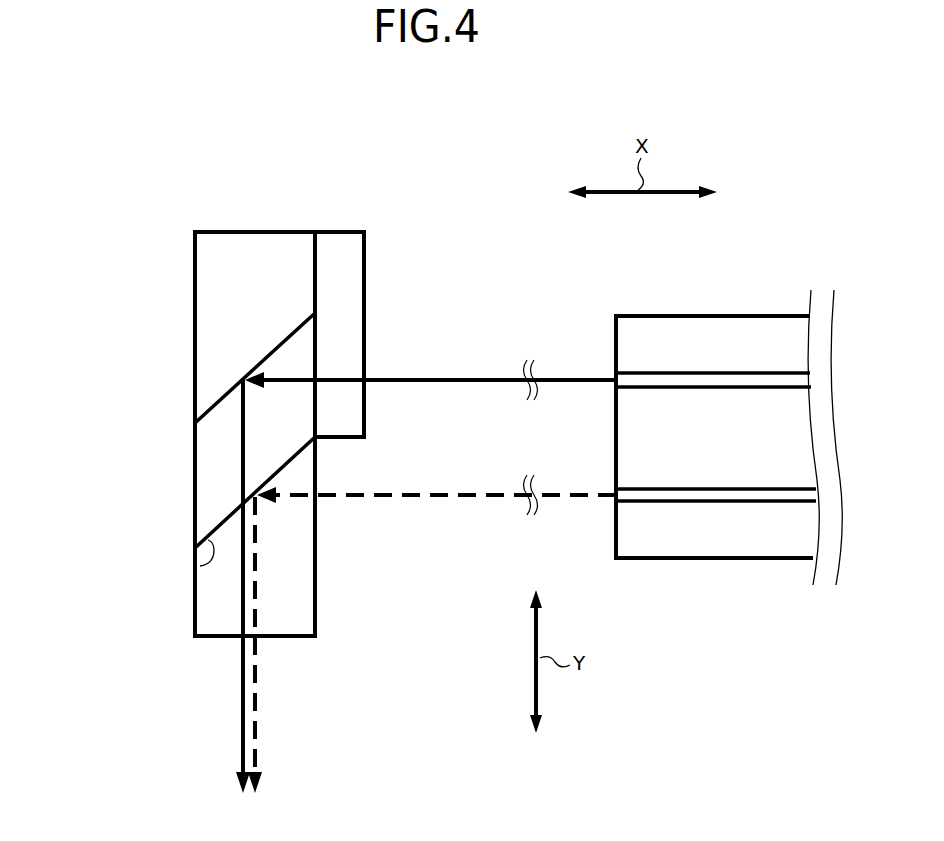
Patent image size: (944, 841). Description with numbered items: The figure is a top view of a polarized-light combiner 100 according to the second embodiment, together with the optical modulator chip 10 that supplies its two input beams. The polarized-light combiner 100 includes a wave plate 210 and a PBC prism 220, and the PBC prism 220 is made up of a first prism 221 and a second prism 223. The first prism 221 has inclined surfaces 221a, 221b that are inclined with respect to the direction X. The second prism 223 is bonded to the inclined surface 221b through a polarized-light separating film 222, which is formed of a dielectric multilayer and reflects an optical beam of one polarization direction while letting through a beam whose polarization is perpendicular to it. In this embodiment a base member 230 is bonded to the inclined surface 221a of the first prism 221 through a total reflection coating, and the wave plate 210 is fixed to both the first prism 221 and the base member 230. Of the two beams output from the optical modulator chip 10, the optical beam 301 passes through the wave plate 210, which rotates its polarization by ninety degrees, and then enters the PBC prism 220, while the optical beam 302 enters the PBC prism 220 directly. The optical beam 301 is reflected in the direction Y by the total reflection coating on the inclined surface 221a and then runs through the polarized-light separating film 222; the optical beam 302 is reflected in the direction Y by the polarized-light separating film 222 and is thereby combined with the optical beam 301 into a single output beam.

The polarized-light combiner 100 is at (325, 178).
The base member 230 is at (207, 253).
The wave plate 210 is at (368, 247).
The PBC prism 220 is at (92, 465).
The first prism 221 is at (208, 481).
The inclined surface 221a is at (230, 399).
The inclined surface 221b is at (293, 462).
The polarized-light separating film 222 is at (200, 566).
The second prism 223 is at (208, 613).
The optical beam 301 is at (446, 378).
The optical beam 302 is at (454, 500).
The optical modulator chip 10 is at (720, 315).